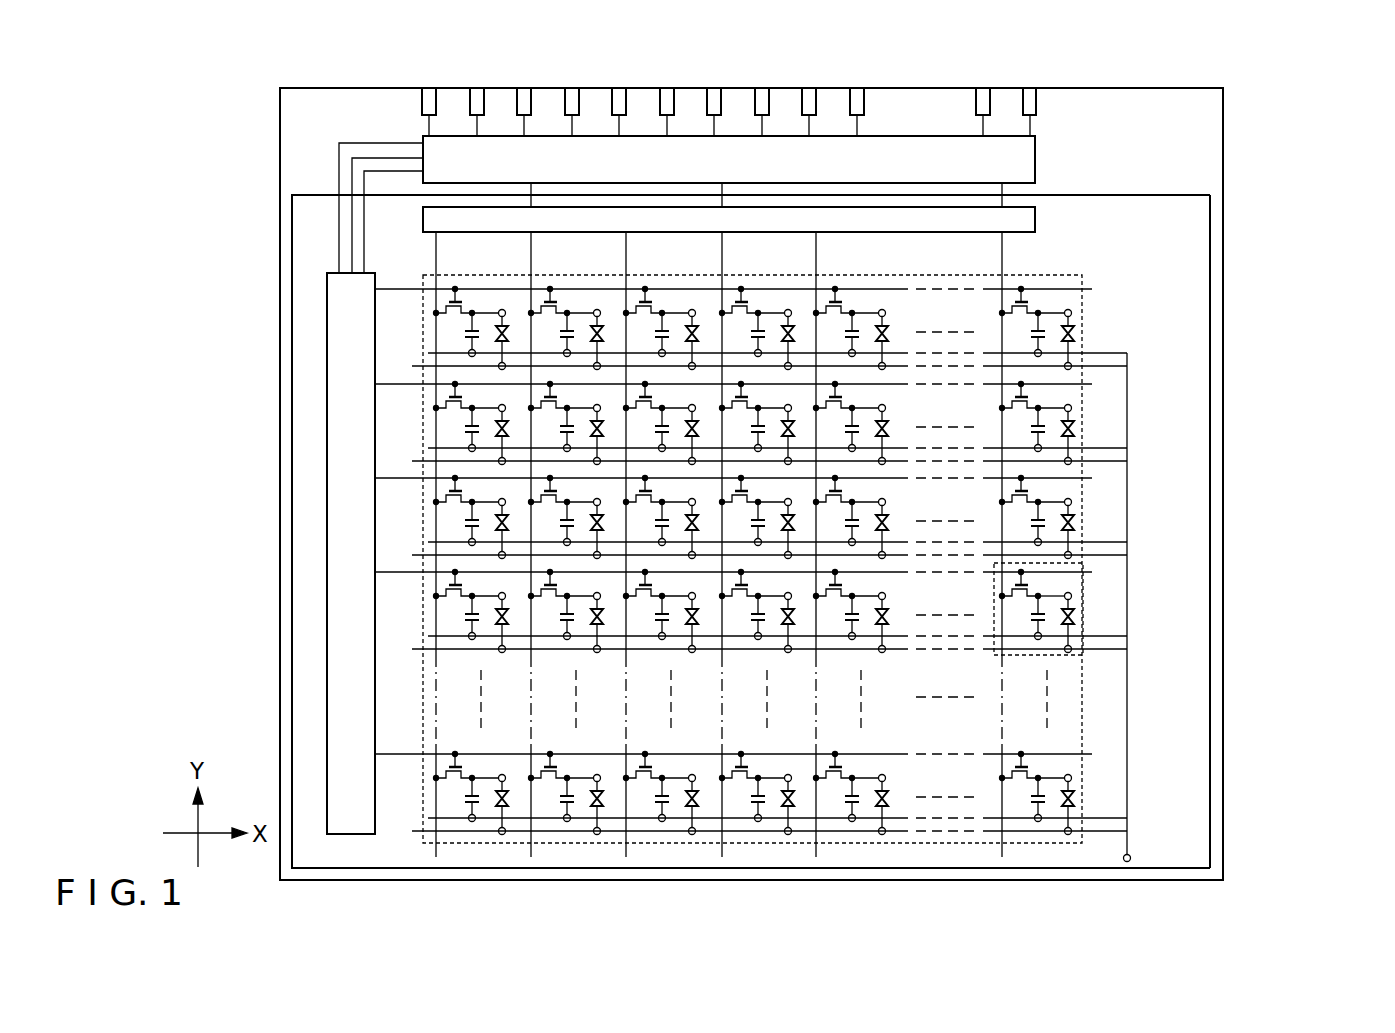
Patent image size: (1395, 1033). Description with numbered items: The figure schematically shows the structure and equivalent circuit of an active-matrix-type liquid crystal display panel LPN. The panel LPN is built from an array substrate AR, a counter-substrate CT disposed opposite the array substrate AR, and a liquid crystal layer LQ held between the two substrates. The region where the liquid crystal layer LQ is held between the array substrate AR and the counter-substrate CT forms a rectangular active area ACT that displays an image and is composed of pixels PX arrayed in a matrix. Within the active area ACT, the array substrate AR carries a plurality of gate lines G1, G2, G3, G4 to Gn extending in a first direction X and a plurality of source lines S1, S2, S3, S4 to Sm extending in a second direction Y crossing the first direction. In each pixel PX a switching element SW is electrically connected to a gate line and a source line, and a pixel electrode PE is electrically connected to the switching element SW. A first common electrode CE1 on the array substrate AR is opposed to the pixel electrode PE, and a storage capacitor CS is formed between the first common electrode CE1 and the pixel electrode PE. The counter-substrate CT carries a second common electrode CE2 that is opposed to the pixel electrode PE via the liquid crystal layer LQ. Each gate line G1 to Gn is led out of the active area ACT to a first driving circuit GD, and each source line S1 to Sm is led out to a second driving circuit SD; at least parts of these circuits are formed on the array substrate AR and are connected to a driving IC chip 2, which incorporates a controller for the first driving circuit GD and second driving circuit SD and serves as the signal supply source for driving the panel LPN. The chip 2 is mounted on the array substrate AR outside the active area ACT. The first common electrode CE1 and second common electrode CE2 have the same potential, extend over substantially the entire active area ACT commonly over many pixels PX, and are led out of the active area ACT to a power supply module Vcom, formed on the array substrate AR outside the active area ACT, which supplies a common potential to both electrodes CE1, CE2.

The liquid crystal display panel LPN is at (1273, 102).
The array substrate AR is at (1204, 150).
The counter-substrate CT is at (1211, 255).
The driving IC chip 2 is at (1036, 138).
The second driving circuit SD is at (1036, 218).
The first driving circuit GD is at (326, 680).
The gate line G1 is at (392, 287).
The gate line G2 is at (392, 382).
The gate line G3 is at (392, 476).
The gate line G4 is at (392, 570).
The gate line Gn is at (392, 752).
The source line S1 is at (437, 254).
The source line S2 is at (532, 254).
The source line S3 is at (627, 254).
The source line S4 is at (723, 254).
The source line Sm is at (1003, 254).
The active area ACT is at (1083, 398).
The pixel PX is at (1075, 656).
The switching element SW is at (996, 584).
The storage capacitor CS is at (1018, 618).
The pixel electrode PE is at (1070, 593).
The liquid crystal layer LQ is at (1074, 606).
The first common electrode CE1 is at (1038, 640).
The second common electrode CE2 is at (1070, 646).
The power supply module Vcom is at (1123, 862).